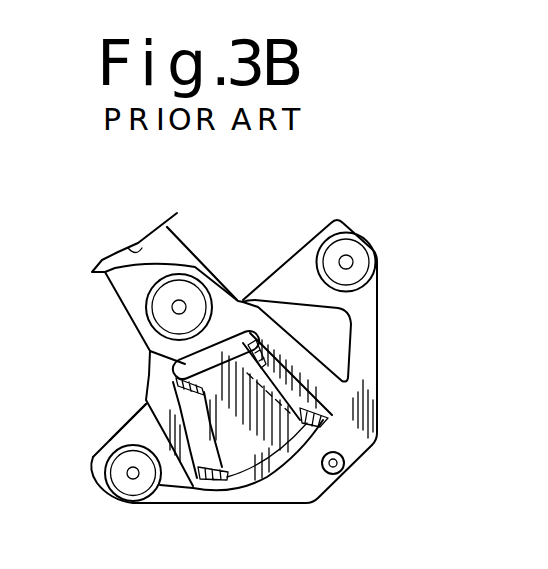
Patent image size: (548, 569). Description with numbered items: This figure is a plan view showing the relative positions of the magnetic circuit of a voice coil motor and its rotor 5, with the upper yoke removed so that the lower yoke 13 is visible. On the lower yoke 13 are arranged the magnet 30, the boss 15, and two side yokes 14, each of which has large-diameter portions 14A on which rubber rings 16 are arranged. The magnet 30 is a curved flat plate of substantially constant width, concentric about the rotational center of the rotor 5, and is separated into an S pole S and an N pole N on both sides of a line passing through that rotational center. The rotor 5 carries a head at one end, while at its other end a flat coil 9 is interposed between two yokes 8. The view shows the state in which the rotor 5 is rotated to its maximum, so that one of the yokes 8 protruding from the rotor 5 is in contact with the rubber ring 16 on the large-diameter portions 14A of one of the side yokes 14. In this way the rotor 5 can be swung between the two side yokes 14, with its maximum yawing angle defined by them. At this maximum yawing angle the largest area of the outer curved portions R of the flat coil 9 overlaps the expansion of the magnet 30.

The rotor 5 is at (205, 257).
The yokes 8 is at (160, 373).
The flat coil 9 is at (277, 467).
The lower yoke 13 is at (365, 345).
The side yokes 14 is at (131, 476).
The large-diameter portions 14A is at (110, 463).
The boss 15 is at (343, 469).
The rubber rings 16 is at (127, 441).
The magnet 30 is at (293, 305).
The S pole S is at (322, 327).
The N pole N is at (242, 443).
The outer curved portions R is at (220, 492).